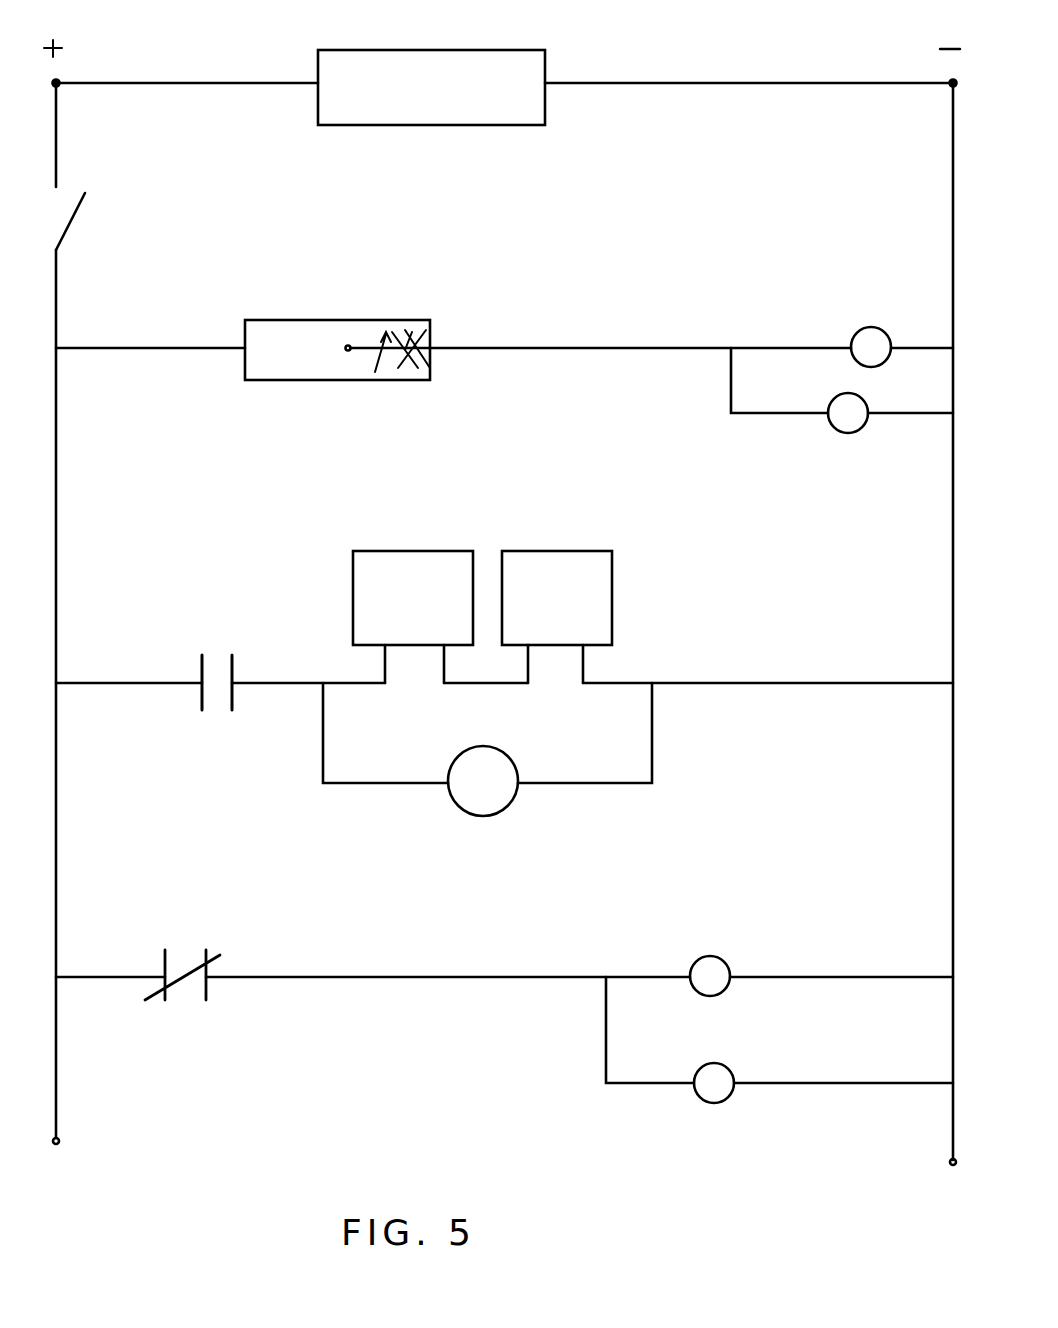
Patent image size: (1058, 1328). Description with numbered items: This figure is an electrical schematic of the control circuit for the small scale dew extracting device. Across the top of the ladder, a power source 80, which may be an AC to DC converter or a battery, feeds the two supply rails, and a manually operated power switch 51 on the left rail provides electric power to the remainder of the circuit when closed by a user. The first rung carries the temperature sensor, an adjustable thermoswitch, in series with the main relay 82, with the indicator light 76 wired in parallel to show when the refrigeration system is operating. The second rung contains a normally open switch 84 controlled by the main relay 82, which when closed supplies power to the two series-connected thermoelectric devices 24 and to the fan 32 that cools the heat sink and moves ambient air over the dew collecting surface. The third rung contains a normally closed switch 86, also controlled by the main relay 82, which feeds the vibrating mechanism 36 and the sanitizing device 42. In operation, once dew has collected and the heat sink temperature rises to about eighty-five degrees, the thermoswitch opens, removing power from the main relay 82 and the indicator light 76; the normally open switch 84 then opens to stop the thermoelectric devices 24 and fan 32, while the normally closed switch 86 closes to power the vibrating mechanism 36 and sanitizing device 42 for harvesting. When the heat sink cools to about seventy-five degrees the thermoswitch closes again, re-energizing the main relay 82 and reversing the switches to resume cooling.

The power source 80 is at (444, 58).
The power switch 51 is at (85, 212).
The main relay 82 is at (874, 318).
The indicator light 76 is at (848, 434).
The normally open switch 84 is at (197, 678).
The thermoelectric devices 24 is at (352, 596).
The fan 32 is at (500, 752).
The normally closed switch 86 is at (163, 960).
The vibrating mechanism 36 is at (730, 955).
The sanitizing device 42 is at (732, 1065).